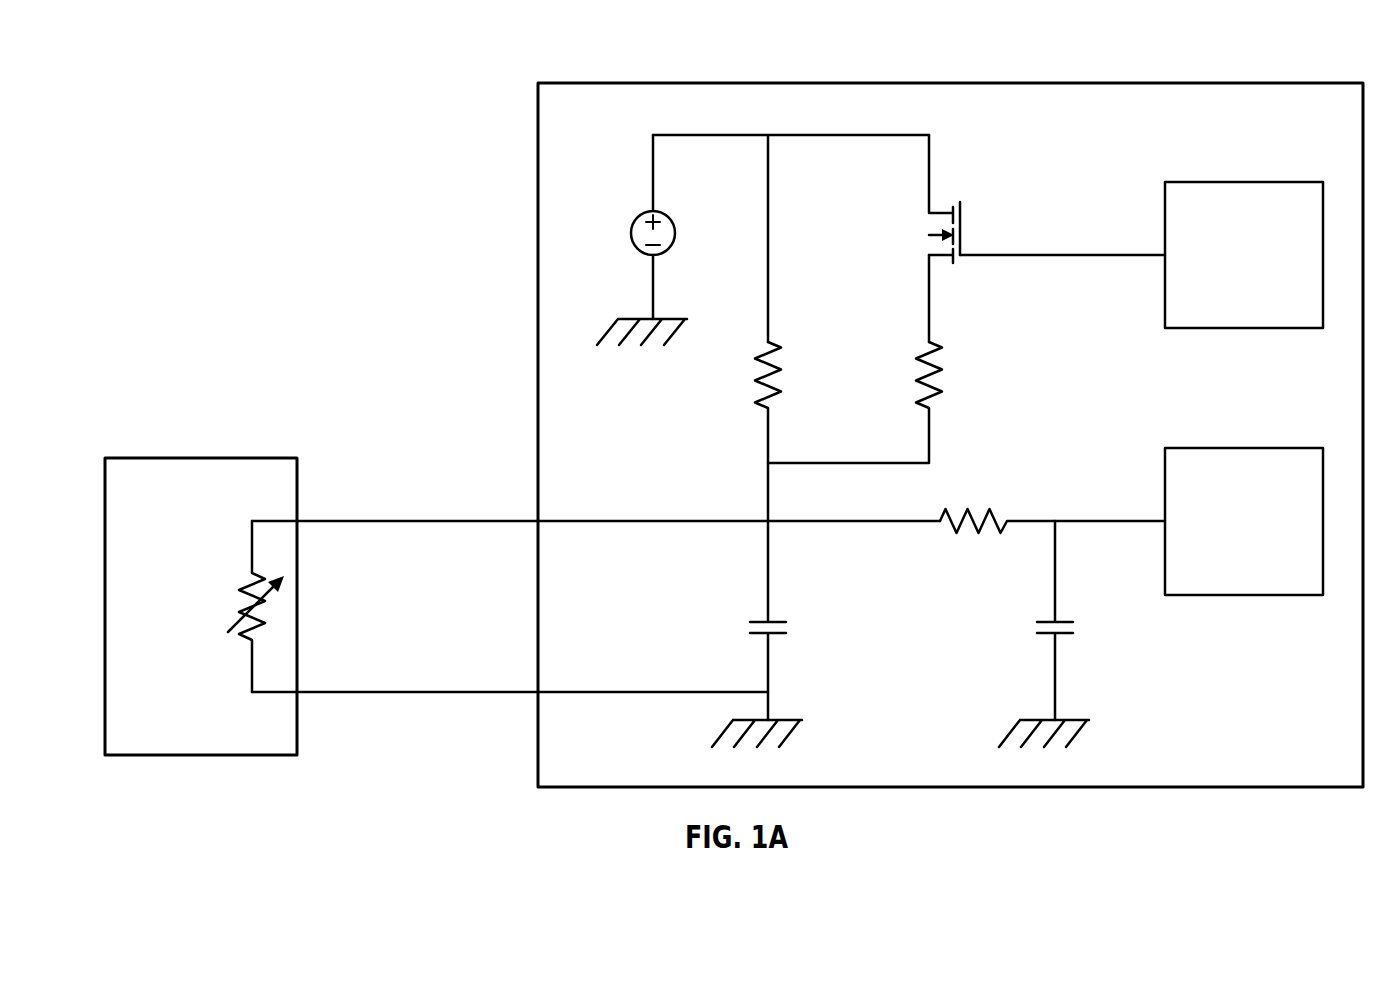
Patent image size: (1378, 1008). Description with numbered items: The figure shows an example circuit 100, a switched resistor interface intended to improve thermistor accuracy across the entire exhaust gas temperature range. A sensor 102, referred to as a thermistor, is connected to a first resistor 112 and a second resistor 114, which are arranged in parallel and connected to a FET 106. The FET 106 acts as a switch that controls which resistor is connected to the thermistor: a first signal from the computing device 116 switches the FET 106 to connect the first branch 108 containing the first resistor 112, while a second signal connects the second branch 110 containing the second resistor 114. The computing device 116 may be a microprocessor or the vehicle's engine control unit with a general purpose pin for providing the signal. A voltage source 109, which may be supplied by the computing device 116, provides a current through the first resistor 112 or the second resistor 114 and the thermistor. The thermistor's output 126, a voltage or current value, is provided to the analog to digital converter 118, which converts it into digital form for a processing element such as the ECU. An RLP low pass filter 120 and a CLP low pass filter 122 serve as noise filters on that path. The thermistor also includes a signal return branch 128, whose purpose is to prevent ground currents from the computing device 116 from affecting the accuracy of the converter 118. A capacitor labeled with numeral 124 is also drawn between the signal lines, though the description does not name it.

The circuit 100 is at (304, 100).
The sensor 102 is at (177, 458).
The FET 106 is at (940, 212).
The first branch 108 is at (767, 188).
The voltage source 109 is at (643, 212).
The second branch 110 is at (930, 285).
The first resistor 112 is at (760, 378).
The second resistor 114 is at (917, 378).
The computing device 116 is at (1255, 182).
The analog to digital converter 118 is at (1255, 448).
The RLP low pass filter 120 is at (970, 510).
The CLP low pass filter 122 is at (1057, 618).
The capacitor C.J1 124 is at (762, 618).
The output 126 is at (490, 520).
The SIGRTN branch 128 is at (488, 693).